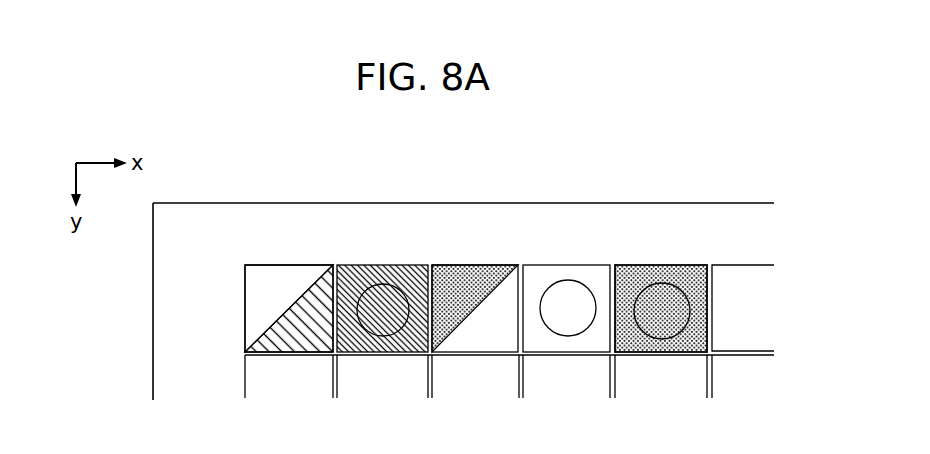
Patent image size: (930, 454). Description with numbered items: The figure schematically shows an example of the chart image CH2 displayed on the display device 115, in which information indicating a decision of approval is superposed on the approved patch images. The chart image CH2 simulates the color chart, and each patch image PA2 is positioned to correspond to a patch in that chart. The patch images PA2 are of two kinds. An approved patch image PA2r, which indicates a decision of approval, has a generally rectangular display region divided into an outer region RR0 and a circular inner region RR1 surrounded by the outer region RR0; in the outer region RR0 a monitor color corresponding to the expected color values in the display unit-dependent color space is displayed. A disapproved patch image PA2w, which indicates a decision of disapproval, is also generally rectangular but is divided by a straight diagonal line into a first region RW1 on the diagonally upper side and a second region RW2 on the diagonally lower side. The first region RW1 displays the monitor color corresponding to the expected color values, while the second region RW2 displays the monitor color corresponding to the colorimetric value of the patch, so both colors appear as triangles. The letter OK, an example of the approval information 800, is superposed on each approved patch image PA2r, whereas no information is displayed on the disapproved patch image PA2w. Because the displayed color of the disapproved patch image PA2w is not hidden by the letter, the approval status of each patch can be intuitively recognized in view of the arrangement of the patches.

The display device 115 is at (230, 187).
The disapproved patch image PA2w is at (236, 272).
The approved patch image PA2r is at (390, 250).
The patch image PA2 is at (545, 250).
The chart image CH2 is at (673, 250).
The outer region RR0 is at (700, 286).
The inner region RR1 is at (688, 302).
The first region RW1 is at (255, 312).
The second region RW2 is at (270, 346).
The approval information 800 is at (400, 348).